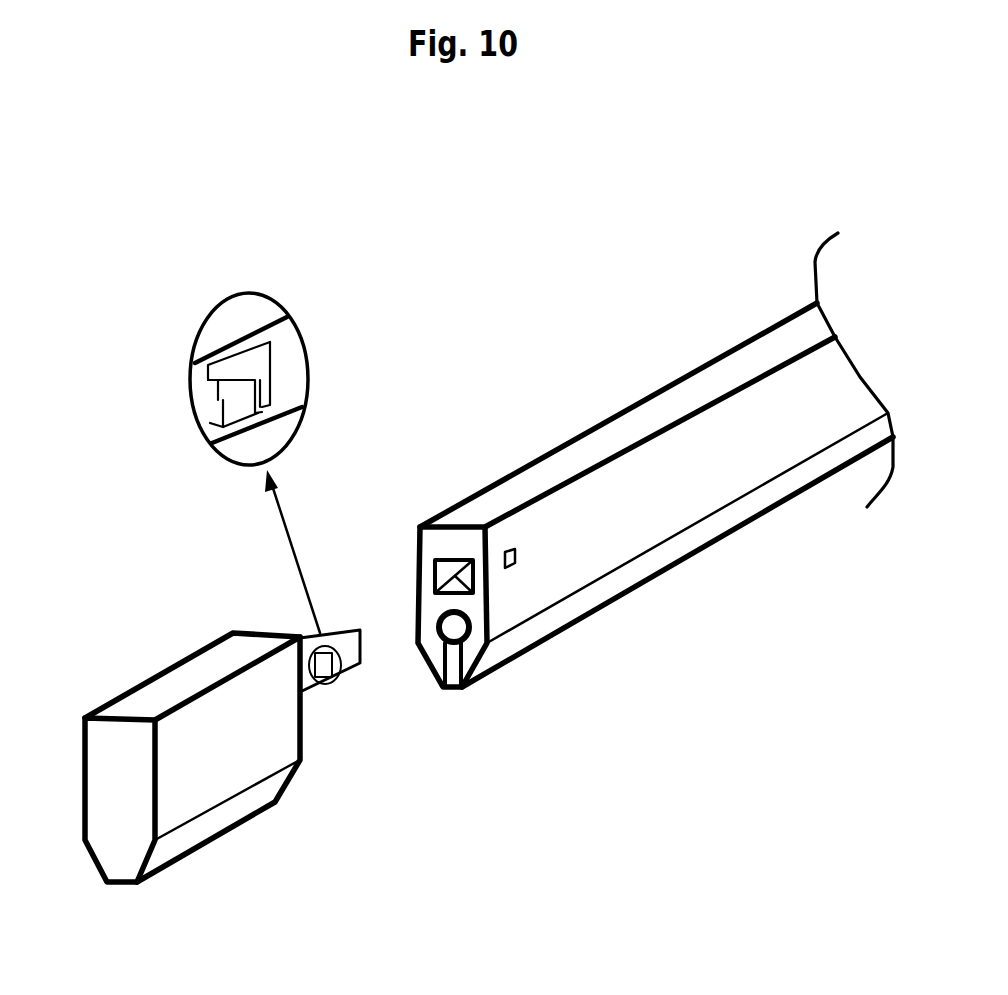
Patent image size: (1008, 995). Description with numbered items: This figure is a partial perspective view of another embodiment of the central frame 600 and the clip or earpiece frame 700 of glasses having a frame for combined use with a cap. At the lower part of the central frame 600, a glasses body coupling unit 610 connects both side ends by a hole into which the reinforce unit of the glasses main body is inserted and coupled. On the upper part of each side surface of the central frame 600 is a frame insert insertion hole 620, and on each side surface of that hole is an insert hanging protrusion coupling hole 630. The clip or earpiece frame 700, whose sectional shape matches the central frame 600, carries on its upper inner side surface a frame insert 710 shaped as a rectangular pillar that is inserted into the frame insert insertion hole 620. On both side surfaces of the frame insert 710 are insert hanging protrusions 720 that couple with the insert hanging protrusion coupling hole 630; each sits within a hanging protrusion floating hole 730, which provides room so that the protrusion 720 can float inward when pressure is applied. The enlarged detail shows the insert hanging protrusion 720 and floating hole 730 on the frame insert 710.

The central frame 600 is at (726, 310).
The glasses body coupling unit 610 is at (456, 632).
The frame insert insertion hole 620 is at (475, 597).
The insert hanging protrusion coupling hole 630 is at (517, 560).
The clip or earpiece frame 700 is at (150, 645).
The frame insert 710 is at (361, 664).
The insert hanging protrusion 720 is at (257, 393).
The hanging protrusion floating hole 730 is at (262, 352).